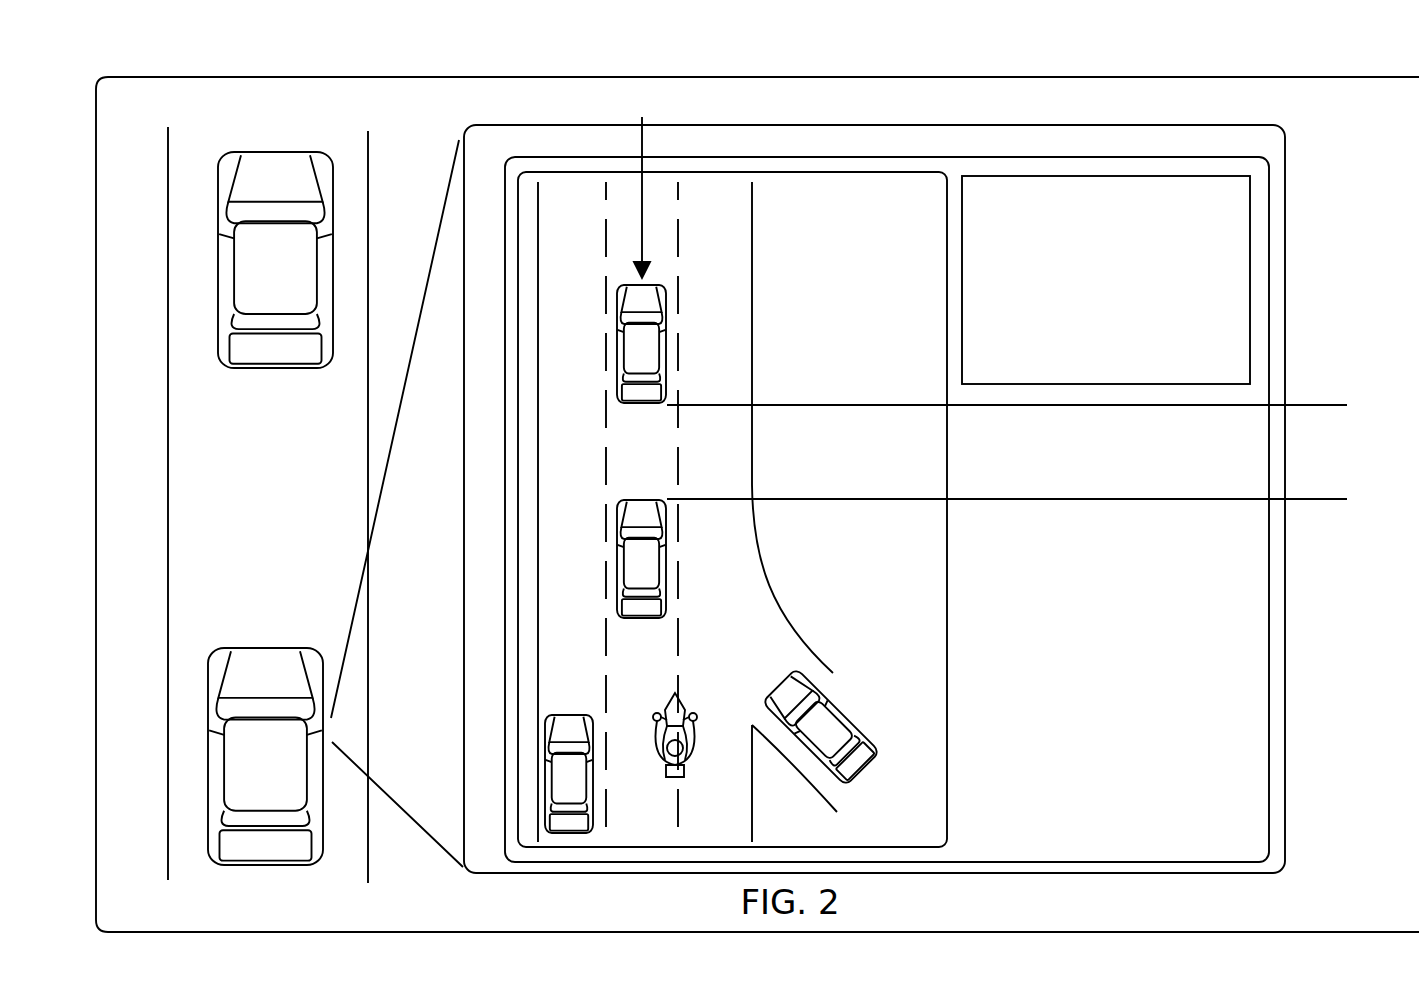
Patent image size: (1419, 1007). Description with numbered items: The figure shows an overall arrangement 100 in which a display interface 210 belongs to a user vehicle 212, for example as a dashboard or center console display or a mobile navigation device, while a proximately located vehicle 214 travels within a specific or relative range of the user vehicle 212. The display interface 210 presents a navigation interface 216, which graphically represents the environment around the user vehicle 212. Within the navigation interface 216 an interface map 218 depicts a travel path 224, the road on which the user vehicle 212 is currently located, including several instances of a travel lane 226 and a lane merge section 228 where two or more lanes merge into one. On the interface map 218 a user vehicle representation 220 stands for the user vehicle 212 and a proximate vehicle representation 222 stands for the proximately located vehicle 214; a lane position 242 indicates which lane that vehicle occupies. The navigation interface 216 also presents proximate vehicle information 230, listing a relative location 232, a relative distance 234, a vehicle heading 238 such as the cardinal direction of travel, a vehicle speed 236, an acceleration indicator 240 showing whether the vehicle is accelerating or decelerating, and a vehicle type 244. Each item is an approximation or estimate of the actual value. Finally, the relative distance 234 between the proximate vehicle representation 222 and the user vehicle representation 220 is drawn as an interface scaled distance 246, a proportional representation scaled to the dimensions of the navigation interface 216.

The driving environment 100 is at (198, 54).
The display interface 210 is at (562, 123).
The user vehicle 212 is at (205, 770).
The proximately located vehicle 214 is at (215, 285).
The navigation interface 216 is at (1093, 155).
The interface map 218 is at (937, 170).
The user vehicle representation 220 is at (666, 552).
The proximate vehicle representation 222 is at (666, 348).
The travel path 224 is at (753, 330).
The travel lane 226 is at (715, 812).
The lane merge section 228 is at (785, 653).
The proximate vehicle information 230 is at (1215, 172).
The relative location 232 is at (1195, 207).
The relative distance 234 is at (1210, 231).
The vehicle speed 236 is at (1155, 293).
The vehicle heading 238 is at (1180, 262).
The acceleration indicator 240 is at (1225, 321).
The lane position 242 is at (620, 114).
The vehicle type 244 is at (1205, 348).
The interface scaled distance 246 is at (1318, 412).